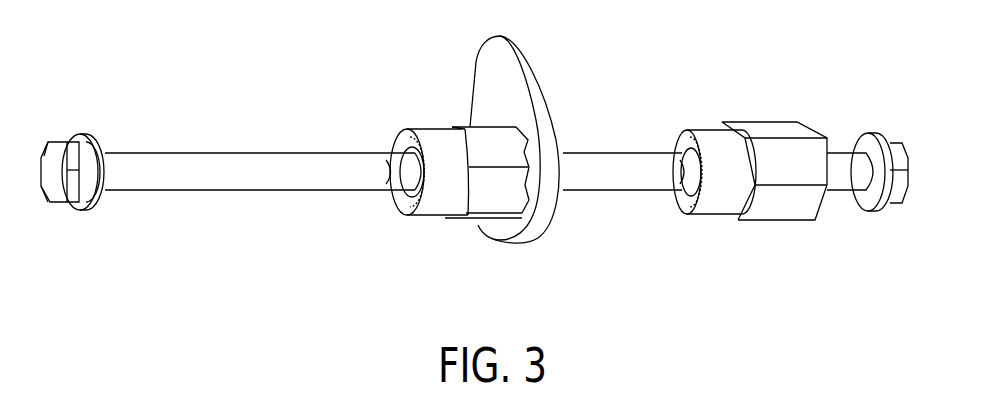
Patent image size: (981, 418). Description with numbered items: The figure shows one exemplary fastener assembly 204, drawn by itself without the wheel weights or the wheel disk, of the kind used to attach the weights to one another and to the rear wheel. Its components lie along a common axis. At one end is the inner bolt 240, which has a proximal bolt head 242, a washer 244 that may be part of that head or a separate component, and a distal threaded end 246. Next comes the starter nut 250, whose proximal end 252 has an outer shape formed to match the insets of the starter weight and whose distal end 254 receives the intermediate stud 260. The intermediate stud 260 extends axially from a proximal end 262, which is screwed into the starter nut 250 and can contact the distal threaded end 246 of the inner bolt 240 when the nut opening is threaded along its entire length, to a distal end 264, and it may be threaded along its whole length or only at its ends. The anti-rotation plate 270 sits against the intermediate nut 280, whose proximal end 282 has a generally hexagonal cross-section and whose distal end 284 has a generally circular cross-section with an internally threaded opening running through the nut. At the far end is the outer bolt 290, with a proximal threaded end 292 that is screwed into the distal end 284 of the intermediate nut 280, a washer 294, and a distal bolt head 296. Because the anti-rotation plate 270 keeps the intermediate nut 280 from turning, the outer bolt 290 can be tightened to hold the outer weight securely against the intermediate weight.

The fastener assembly 204 is at (160, 95).
The inner bolt 240 is at (858, 108).
The proximal bolt head 242 is at (898, 205).
The washer 244 is at (870, 200).
The distal threaded end 246 is at (847, 184).
The starter nut 250 is at (750, 240).
The proximal end 252 is at (790, 122).
The distal end 254 is at (703, 128).
The intermediate stud 260 is at (615, 136).
The proximal end 262 is at (680, 186).
The distal end 264 is at (565, 186).
The anti-rotation plate 270 is at (480, 72).
The intermediate nut 280 is at (380, 110).
The proximal end 282 is at (505, 206).
The distal end 284 is at (408, 206).
The outer bolt 290 is at (235, 205).
The proximal threaded end 292 is at (386, 186).
The washer 294 is at (94, 205).
The distal bolt head 296 is at (46, 198).